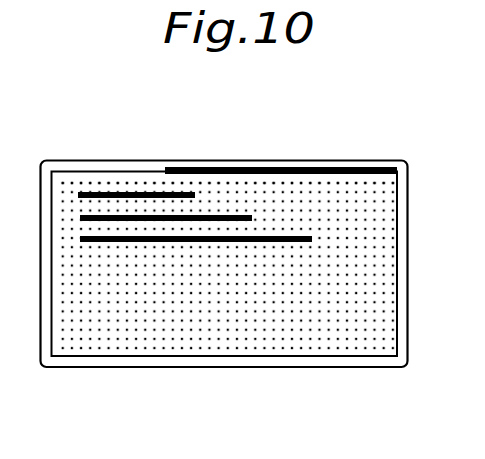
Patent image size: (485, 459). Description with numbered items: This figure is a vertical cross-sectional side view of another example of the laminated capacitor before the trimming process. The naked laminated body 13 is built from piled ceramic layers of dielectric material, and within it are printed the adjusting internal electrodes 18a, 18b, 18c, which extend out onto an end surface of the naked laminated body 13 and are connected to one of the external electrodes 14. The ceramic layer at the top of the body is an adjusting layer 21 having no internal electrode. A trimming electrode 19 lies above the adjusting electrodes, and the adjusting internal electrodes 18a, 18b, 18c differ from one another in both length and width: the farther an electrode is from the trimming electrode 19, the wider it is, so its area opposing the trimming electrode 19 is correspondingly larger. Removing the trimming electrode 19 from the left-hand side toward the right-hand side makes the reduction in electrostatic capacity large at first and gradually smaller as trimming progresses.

The naked laminated body 13 is at (283, 342).
The external electrode 14 is at (75, 360).
The adjusting internal electrode 18a is at (98, 192).
The adjusting internal electrode 18b is at (212, 215).
The adjusting internal electrode 18c is at (272, 238).
The trimming electrode 19 is at (361, 167).
The adjusting layer 21 is at (138, 183).